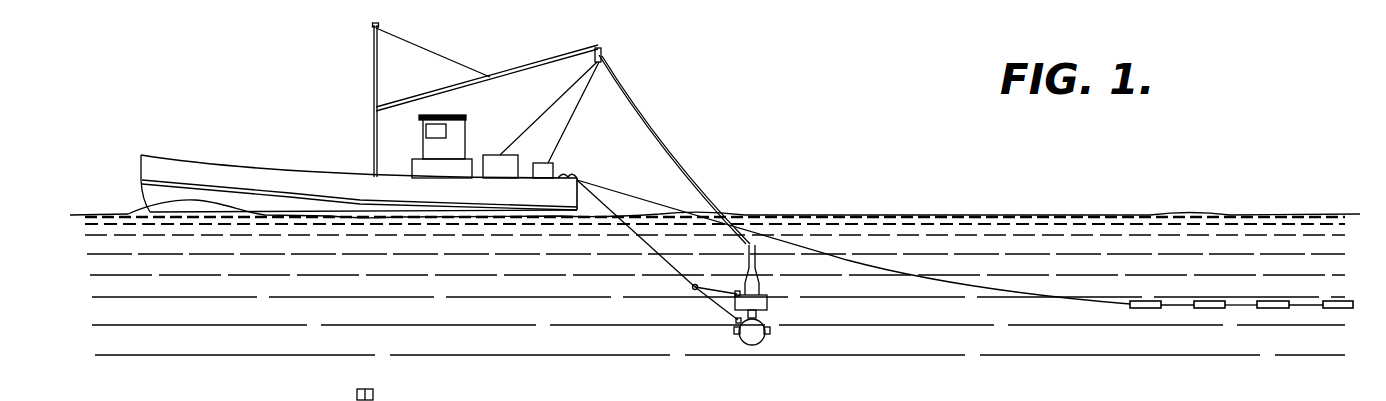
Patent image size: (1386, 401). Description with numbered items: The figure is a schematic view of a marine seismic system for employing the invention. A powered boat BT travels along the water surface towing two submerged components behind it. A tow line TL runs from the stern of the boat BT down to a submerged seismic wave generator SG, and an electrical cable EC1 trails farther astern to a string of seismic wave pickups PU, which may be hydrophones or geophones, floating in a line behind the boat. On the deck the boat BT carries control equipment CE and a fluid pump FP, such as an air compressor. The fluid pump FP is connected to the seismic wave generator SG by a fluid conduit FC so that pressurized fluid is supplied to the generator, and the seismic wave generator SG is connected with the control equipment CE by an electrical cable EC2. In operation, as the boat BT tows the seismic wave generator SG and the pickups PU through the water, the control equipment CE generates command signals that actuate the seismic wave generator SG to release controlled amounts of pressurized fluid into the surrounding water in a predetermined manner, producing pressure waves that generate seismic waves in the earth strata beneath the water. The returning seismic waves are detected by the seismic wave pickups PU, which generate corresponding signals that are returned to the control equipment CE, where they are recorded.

The powered boat BT is at (236, 117).
The control equipment CE is at (500, 155).
The fluid pump FP is at (554, 162).
The fluid conduit FC is at (669, 147).
The electrical cable EC2 is at (667, 165).
The electrical cable EC1 is at (992, 287).
The tow line TL is at (637, 240).
The seismic wave generator SG is at (773, 348).
The seismic wave pickups PU is at (1282, 283).